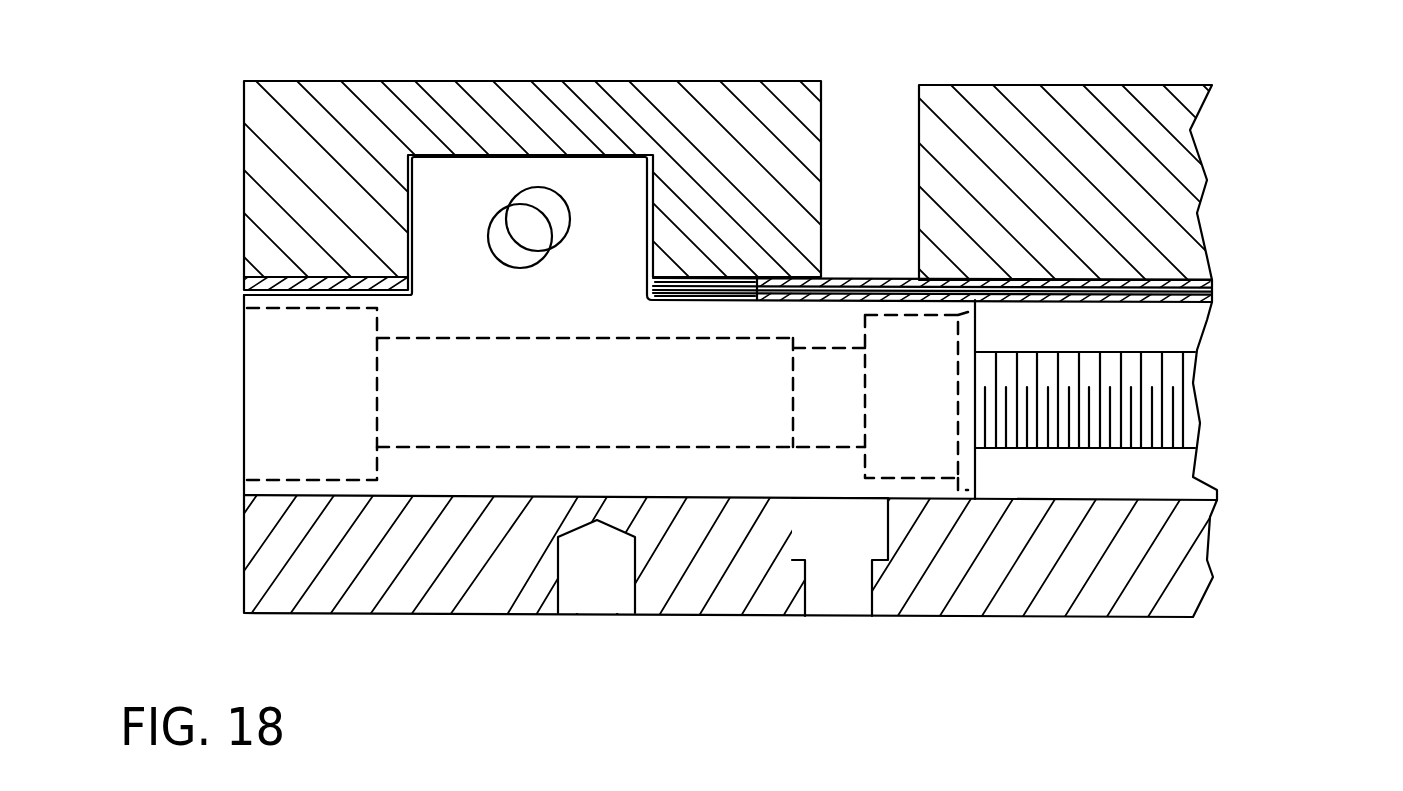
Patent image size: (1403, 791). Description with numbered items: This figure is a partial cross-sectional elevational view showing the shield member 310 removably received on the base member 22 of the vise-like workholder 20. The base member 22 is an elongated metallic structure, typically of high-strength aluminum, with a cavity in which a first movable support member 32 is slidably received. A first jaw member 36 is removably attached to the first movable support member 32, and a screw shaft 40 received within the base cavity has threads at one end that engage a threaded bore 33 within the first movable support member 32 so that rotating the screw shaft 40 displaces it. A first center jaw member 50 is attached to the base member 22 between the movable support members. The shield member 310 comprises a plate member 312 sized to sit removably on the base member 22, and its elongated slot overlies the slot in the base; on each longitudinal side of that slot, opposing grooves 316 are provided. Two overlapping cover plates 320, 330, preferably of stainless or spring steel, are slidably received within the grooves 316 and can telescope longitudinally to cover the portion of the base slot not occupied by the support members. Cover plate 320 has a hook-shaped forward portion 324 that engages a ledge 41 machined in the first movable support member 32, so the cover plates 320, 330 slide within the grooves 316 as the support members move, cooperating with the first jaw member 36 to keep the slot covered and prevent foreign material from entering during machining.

The workholder 20 is at (397, 617).
The base member 22 is at (277, 545).
The first movable support member 32 is at (580, 309).
The threaded bore 33 is at (455, 447).
The first jaw member 36 is at (567, 105).
The screw shaft 40 is at (1140, 450).
The ledge 41 is at (757, 293).
The first center jaw member 50 is at (1093, 98).
The shield member 310 is at (235, 283).
The plate member 312 is at (290, 287).
The grooves 316 is at (1213, 301).
The cover plate 320 is at (882, 280).
The hook-shaped forward portion 324 is at (756, 297).
The cover plate 330 is at (1090, 303).